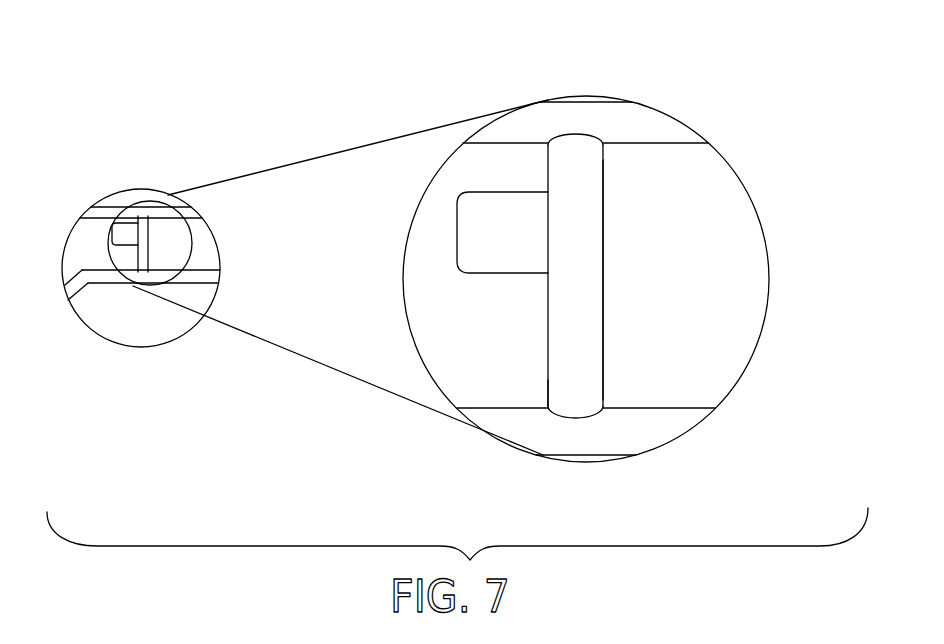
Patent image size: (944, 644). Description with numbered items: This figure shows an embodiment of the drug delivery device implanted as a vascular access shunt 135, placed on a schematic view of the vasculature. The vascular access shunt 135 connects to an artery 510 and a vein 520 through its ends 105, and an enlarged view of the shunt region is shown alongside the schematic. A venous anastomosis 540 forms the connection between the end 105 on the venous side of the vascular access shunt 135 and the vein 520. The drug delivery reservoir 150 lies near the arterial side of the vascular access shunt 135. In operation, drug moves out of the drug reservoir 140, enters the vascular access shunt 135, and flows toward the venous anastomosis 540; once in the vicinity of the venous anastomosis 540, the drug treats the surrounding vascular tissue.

The end 105 is at (580, 130).
The vascular access shunt 135 is at (608, 288).
The drug reservoir 140 is at (480, 262).
The drug delivery reservoir 150 is at (448, 222).
The artery 510 is at (647, 123).
The vein 520 is at (650, 430).
The venous anastomosis 540 is at (546, 401).